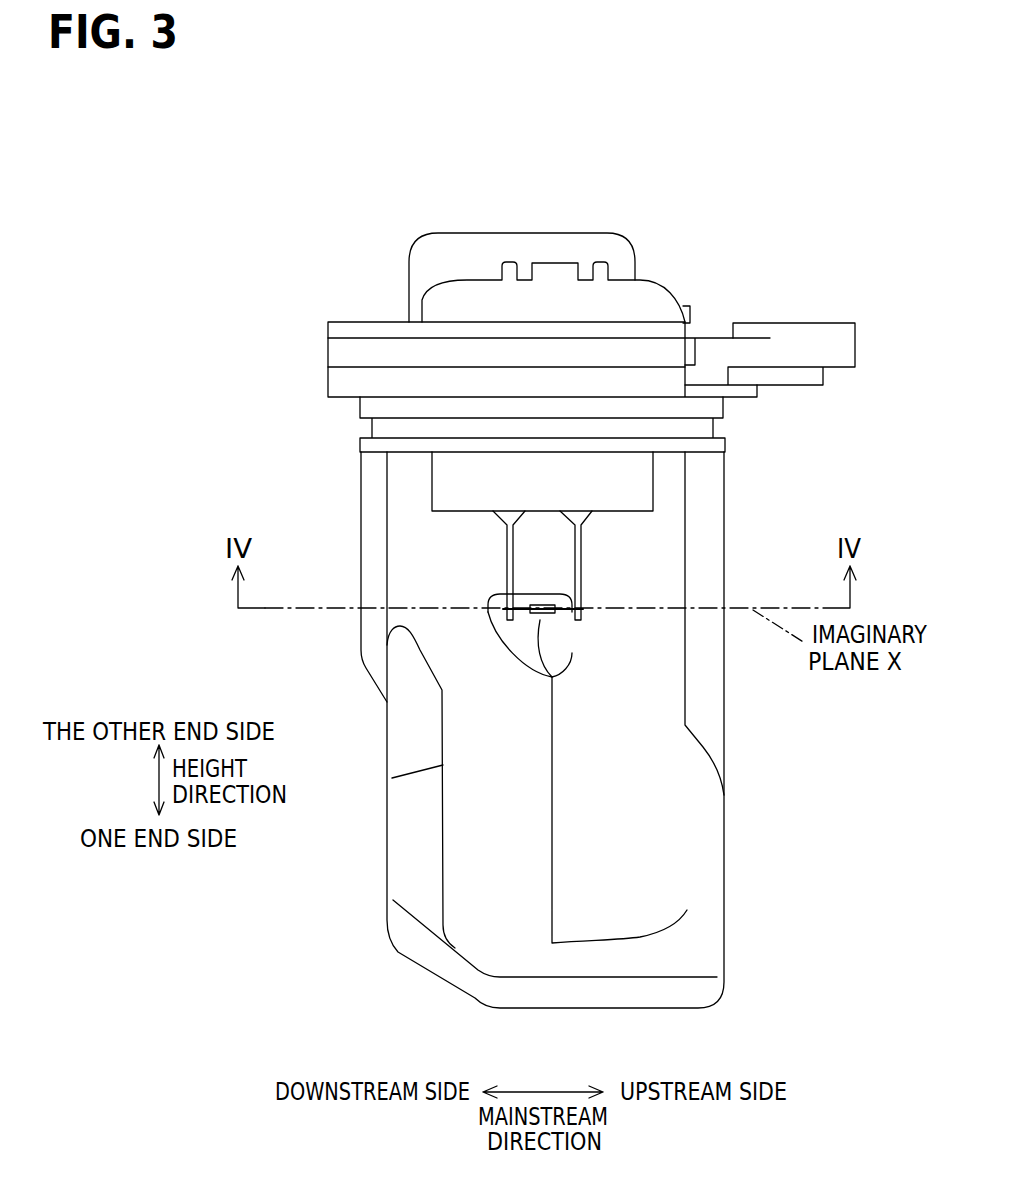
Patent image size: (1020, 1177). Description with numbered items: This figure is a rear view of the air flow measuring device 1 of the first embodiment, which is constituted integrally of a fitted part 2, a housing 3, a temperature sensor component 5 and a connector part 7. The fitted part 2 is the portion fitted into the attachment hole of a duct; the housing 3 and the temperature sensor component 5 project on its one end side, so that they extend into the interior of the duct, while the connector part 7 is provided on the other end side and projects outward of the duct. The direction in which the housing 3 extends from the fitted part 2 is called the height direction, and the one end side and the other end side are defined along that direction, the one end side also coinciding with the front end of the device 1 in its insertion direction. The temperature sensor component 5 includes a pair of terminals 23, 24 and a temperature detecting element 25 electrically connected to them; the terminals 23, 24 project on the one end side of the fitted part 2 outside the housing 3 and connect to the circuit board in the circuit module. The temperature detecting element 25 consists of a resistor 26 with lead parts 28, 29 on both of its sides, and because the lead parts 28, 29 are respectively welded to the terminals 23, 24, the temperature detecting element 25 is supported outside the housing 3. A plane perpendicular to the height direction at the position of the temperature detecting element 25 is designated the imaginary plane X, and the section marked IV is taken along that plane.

The flow measuring device 1 is at (347, 192).
The fitted part 2 is at (720, 410).
The housing 3 is at (405, 850).
The temperature sensor component 5 is at (597, 543).
The connector part 7 is at (670, 297).
The terminal 23 is at (582, 574).
The terminal 24 is at (507, 576).
The temperature detecting element 25 is at (545, 617).
The resistor 26 is at (553, 628).
The lead part 28 is at (562, 612).
The lead part 29 is at (507, 616).